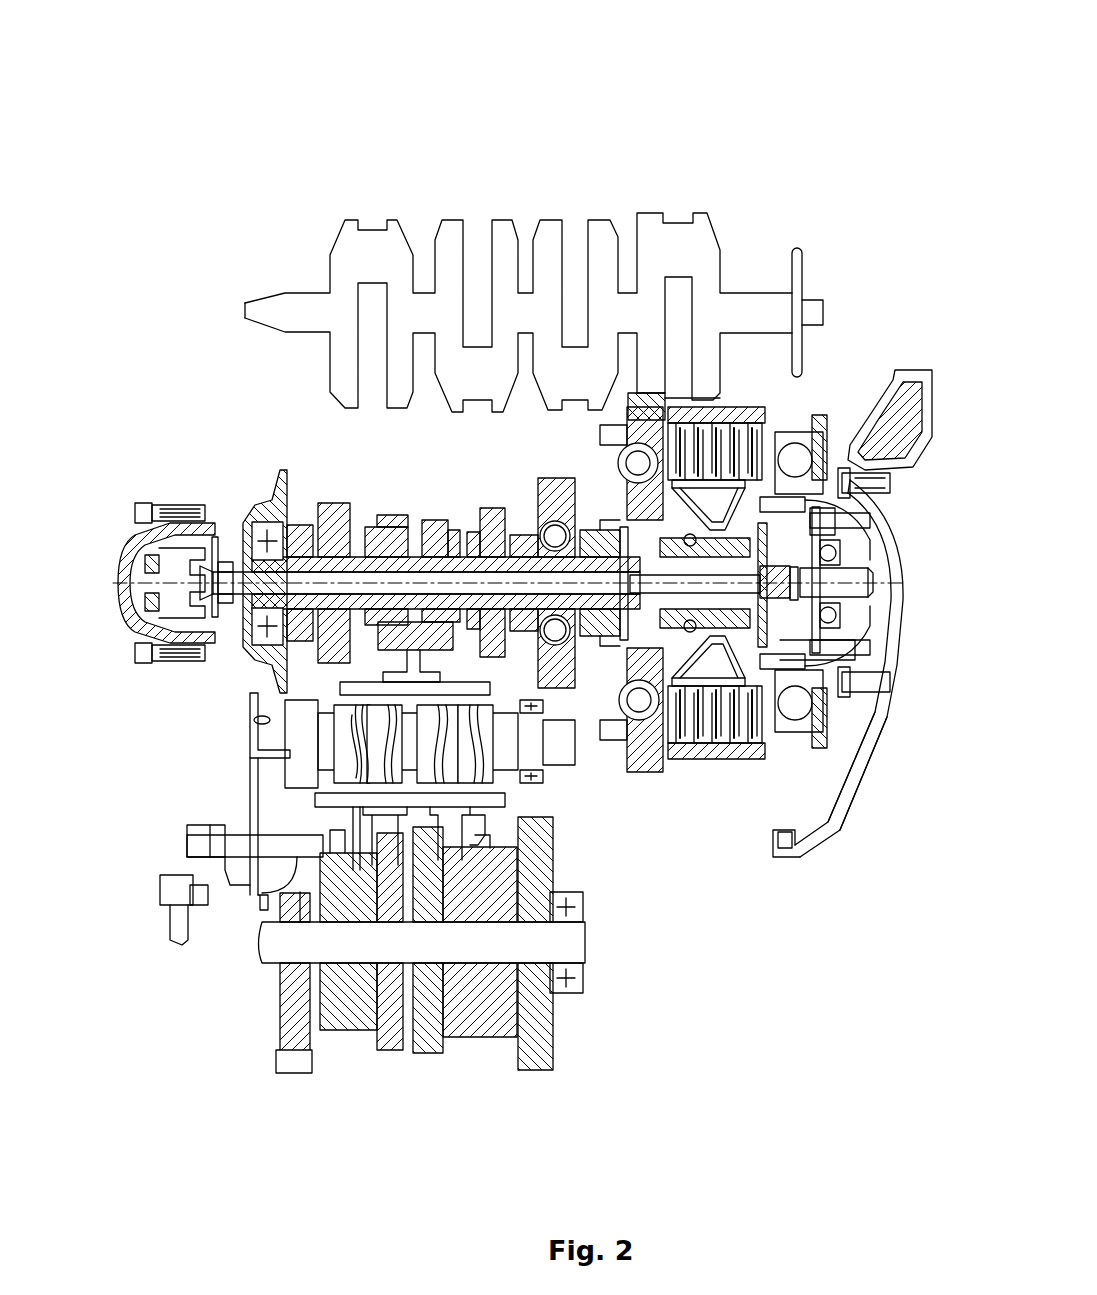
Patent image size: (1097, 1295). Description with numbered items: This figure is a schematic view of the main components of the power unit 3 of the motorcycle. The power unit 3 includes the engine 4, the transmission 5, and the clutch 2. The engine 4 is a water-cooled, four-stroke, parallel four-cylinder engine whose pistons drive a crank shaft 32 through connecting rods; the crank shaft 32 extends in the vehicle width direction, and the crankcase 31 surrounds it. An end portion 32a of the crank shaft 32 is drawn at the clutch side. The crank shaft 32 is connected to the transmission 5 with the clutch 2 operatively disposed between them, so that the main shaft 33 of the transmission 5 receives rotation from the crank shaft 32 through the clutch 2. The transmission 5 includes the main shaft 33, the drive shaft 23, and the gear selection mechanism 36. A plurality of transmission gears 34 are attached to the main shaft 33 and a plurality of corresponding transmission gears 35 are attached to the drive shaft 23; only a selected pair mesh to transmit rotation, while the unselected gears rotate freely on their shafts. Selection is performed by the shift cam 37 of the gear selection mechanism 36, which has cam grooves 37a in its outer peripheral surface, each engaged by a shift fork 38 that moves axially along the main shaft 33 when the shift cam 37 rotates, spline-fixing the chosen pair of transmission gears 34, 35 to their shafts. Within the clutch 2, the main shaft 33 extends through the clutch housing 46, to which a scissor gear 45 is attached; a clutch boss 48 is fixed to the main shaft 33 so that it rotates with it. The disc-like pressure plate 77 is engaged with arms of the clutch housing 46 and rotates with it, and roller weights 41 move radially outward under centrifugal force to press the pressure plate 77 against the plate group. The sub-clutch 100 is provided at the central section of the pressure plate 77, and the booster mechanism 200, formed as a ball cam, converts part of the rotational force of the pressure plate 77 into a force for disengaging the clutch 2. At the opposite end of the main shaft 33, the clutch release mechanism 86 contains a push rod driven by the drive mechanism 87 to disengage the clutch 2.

The clutch 2 is at (780, 590).
The power unit 3 is at (513, 537).
The engine 4 is at (534, 269).
The transmission 5 is at (485, 740).
The drive shaft 23 is at (590, 940).
The crankcase 31 is at (858, 795).
The crank shaft 32 is at (600, 228).
The crankshaft end portion 32a is at (655, 400).
The main shaft 33 is at (515, 570).
The transmission gears 34 is at (460, 510).
The transmission gears 35 is at (574, 860).
The gear selection mechanism 36 is at (230, 725).
The shift cam 37 is at (326, 693).
The cam grooves 37a is at (463, 727).
The shift fork 38 is at (487, 825).
The roller weights 41 is at (805, 717).
The scissor gear 45 is at (650, 775).
The clutch housing 46 is at (735, 760).
The clutch boss 48 is at (705, 752).
The pressure plate 77 is at (778, 750).
The clutch release mechanism 86 is at (105, 542).
The drive mechanism 87 is at (194, 490).
The sub-clutch 100 is at (790, 650).
The booster mechanism 200 is at (873, 562).